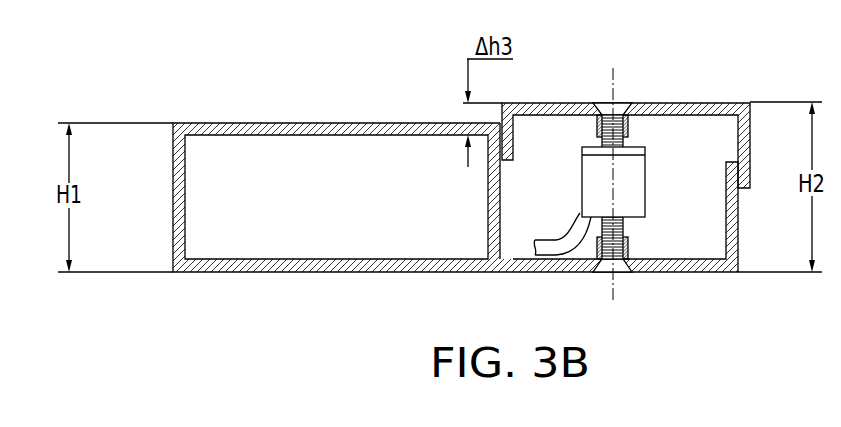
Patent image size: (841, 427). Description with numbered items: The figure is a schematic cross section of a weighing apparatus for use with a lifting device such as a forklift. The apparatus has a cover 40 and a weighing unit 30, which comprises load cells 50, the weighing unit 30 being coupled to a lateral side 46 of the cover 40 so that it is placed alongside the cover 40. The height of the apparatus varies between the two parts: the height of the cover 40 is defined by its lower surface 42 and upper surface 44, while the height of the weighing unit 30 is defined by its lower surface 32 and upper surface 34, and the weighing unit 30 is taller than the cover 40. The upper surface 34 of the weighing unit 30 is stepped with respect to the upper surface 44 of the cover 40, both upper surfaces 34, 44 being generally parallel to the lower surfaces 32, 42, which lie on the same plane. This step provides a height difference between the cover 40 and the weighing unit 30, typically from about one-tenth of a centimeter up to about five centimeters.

The weighing unit 30 is at (625, 193).
The lower surface 32 is at (557, 272).
The upper surface 34 is at (685, 103).
The cover 40 is at (427, 211).
The lower surface 42 is at (298, 272).
The upper surface 44 is at (207, 127).
The lateral side 46 is at (178, 207).
The load cells 50 is at (660, 116).